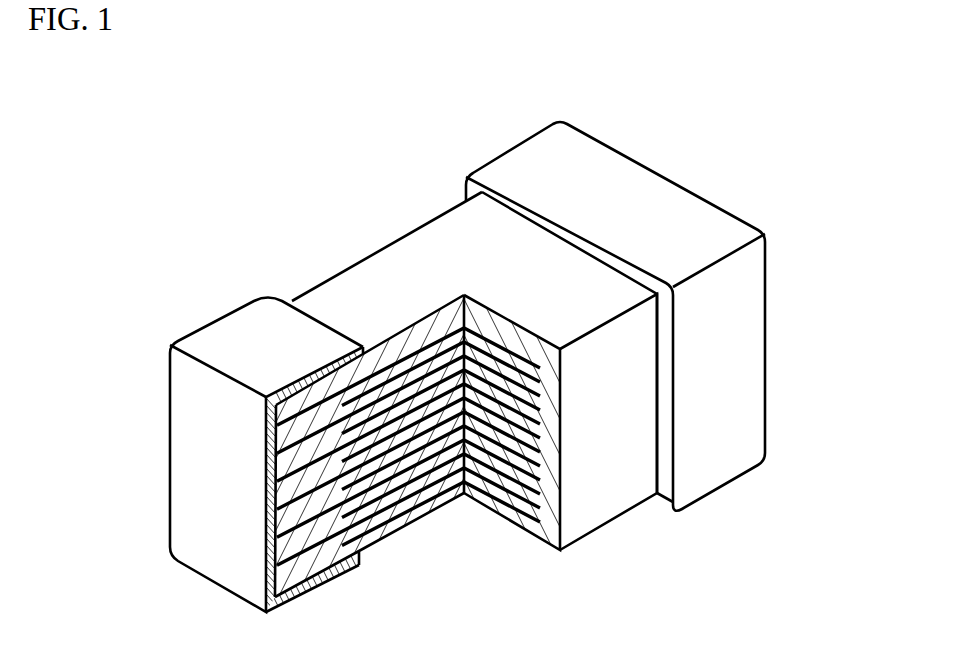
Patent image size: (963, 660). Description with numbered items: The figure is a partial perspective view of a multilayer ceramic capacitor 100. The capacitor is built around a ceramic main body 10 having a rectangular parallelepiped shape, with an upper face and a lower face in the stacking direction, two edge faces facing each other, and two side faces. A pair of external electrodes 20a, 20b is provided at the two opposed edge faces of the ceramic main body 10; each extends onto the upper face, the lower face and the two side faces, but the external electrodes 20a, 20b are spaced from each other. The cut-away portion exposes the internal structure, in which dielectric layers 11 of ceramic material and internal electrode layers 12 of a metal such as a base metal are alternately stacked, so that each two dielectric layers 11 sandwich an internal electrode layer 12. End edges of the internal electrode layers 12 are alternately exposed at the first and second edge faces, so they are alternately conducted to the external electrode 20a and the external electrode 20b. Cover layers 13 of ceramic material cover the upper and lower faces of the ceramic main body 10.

The multilayer ceramic capacitor 100 is at (860, 122).
The ceramic main body 10 is at (390, 399).
The dielectric layer 11 is at (387, 497).
The internal electrode layer 12 is at (412, 473).
The cover layer 13 is at (435, 237).
The external electrode 20a is at (198, 330).
The external electrode 20b is at (520, 165).